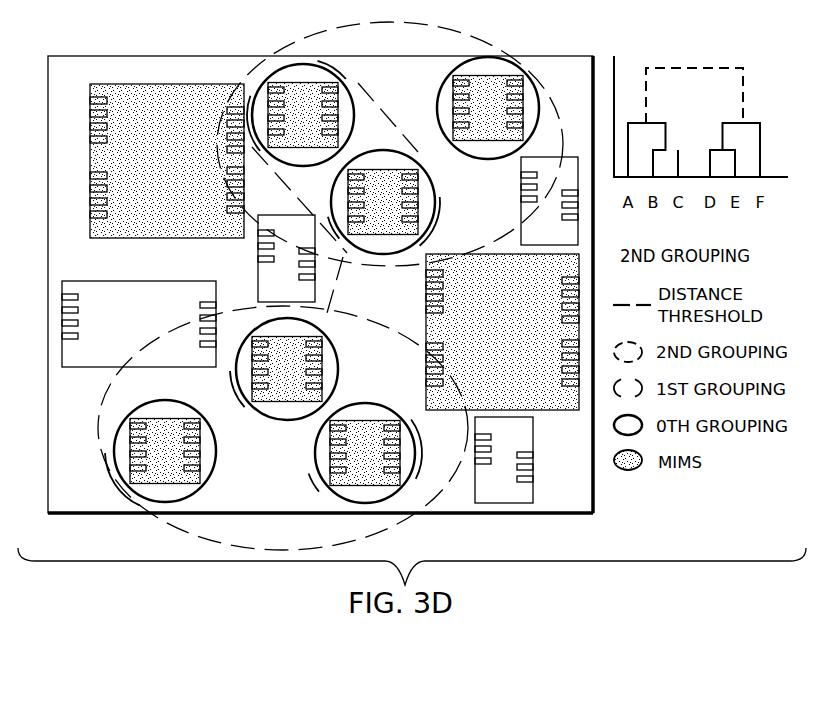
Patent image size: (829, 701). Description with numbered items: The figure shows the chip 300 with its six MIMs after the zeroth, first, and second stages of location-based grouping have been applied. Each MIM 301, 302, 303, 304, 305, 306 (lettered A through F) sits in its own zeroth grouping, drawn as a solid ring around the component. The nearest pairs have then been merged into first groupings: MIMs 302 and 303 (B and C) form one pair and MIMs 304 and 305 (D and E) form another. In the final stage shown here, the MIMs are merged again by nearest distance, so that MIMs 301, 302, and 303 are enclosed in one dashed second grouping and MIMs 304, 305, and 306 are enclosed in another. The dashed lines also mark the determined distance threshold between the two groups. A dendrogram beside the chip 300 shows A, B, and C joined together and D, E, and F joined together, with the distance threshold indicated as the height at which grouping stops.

The chip 300 is at (78, 56).
The MIM 301 is at (130, 450).
The MIM 302 is at (320, 354).
The MIM 303 is at (397, 490).
The MIM 304 is at (339, 99).
The MIM 305 is at (418, 202).
The MIM 306 is at (524, 106).